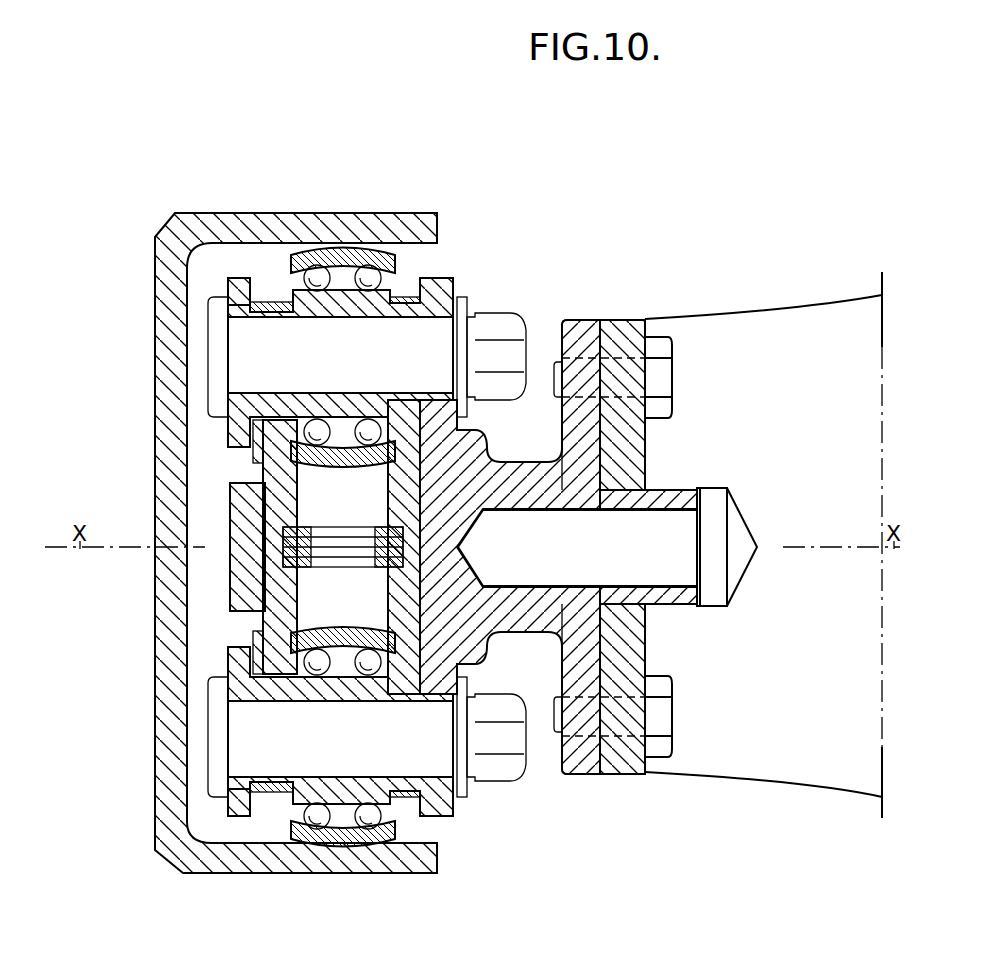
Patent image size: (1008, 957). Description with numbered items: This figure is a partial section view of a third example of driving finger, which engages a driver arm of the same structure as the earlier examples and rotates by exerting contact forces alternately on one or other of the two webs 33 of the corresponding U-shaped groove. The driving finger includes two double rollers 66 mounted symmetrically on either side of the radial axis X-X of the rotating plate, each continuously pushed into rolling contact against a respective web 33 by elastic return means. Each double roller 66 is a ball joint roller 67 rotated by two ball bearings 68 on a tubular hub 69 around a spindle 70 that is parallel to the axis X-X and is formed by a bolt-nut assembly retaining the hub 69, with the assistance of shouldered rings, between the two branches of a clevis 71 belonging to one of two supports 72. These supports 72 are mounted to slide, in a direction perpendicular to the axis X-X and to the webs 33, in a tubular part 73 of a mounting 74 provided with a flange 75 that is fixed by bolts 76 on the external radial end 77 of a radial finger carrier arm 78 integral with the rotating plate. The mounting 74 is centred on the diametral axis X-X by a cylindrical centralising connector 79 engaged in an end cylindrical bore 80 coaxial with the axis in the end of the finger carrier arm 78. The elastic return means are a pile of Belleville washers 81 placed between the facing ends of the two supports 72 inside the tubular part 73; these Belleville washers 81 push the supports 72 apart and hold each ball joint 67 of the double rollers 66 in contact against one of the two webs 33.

The web 33 is at (400, 222).
The double roller 66 is at (405, 541).
The ball joint roller 67 is at (302, 254).
The ball bearing 68 is at (365, 250).
The tubular hub 69 is at (305, 306).
The spindle 70 is at (418, 338).
The clevis 71 is at (239, 283).
The support 72 is at (262, 493).
The tubular part 73 is at (245, 562).
The mounting 74 is at (553, 486).
The flange 75 is at (588, 343).
The bolt 76 is at (655, 372).
The external radial end 77 is at (620, 440).
The finger carrier arm 78 is at (826, 350).
The cylindrical centralising connector 79 is at (657, 502).
The end cylindrical bore 80 is at (712, 575).
The Belleville washers 81 is at (312, 560).